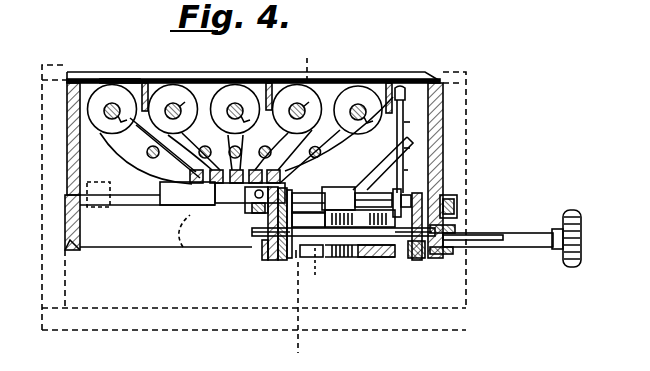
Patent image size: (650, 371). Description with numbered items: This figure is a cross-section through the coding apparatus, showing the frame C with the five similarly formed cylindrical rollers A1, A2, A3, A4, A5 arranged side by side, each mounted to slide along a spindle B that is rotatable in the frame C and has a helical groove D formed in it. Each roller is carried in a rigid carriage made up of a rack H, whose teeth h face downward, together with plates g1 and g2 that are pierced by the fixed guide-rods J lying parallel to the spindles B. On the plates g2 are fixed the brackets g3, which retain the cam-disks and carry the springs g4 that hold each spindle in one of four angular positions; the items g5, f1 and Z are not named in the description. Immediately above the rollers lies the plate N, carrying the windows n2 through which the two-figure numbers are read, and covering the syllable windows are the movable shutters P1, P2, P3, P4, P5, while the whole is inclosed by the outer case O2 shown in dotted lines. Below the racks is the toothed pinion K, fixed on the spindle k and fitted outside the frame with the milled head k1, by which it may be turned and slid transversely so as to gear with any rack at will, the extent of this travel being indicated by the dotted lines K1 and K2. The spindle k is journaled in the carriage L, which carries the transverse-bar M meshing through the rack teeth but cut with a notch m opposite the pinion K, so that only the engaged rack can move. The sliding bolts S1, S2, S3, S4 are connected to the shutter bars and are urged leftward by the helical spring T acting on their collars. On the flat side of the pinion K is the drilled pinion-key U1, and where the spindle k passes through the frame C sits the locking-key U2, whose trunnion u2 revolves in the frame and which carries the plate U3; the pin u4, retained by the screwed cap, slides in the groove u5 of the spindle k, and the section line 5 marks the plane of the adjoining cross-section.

The frame C is at (58, 152).
The section line 5- 5 is at (306, 199).
The shutter P1 is at (99, 80).
The window n2 is at (104, 80).
The shutter P2 is at (166, 80).
The shutter P3 is at (225, 80).
The shutter P4 is at (284, 74).
The shutter P5 is at (340, 80).
The plate N is at (389, 84).
The cylindrical roller A1 is at (112, 109).
The cylindrical roller A2 is at (173, 109).
The cylindrical roller A3 is at (235, 109).
The cylindrical roller A4 is at (297, 109).
The cylindrical roller A5 is at (358, 109).
The spindle B is at (239, 117).
The helical groove D is at (242, 108).
The guide-rod J is at (150, 156).
The plate g1 is at (147, 151).
The notch m is at (336, 140).
The rack H is at (205, 170).
The teeth h is at (263, 168).
The transverse-bar M is at (187, 194).
The plate g2 is at (368, 173).
The bracket g3 is at (416, 124).
The spring g4 is at (416, 150).
The link g5 is at (414, 172).
The slide f1 is at (166, 214).
The dotted line K1 is at (197, 280).
The outer case O2 is at (100, 306).
The toothed pinion K is at (266, 232).
The carriage L is at (256, 246).
The bar Z is at (297, 262).
The pinion-key U1 is at (276, 271).
The dotted line K2 is at (317, 274).
The sliding bolt S2 is at (312, 190).
The helical spring T is at (343, 243).
The sliding bolt S4 is at (363, 245).
The sliding bolt S1 is at (394, 234).
The sliding bolt S3 is at (325, 250).
The spindle k is at (503, 229).
The groove u5 is at (503, 240).
The locking-key U2 is at (416, 247).
The plate U3 is at (452, 260).
The pin u4 is at (462, 230).
The trunnion u2 is at (448, 250).
The milled head k1 is at (570, 264).